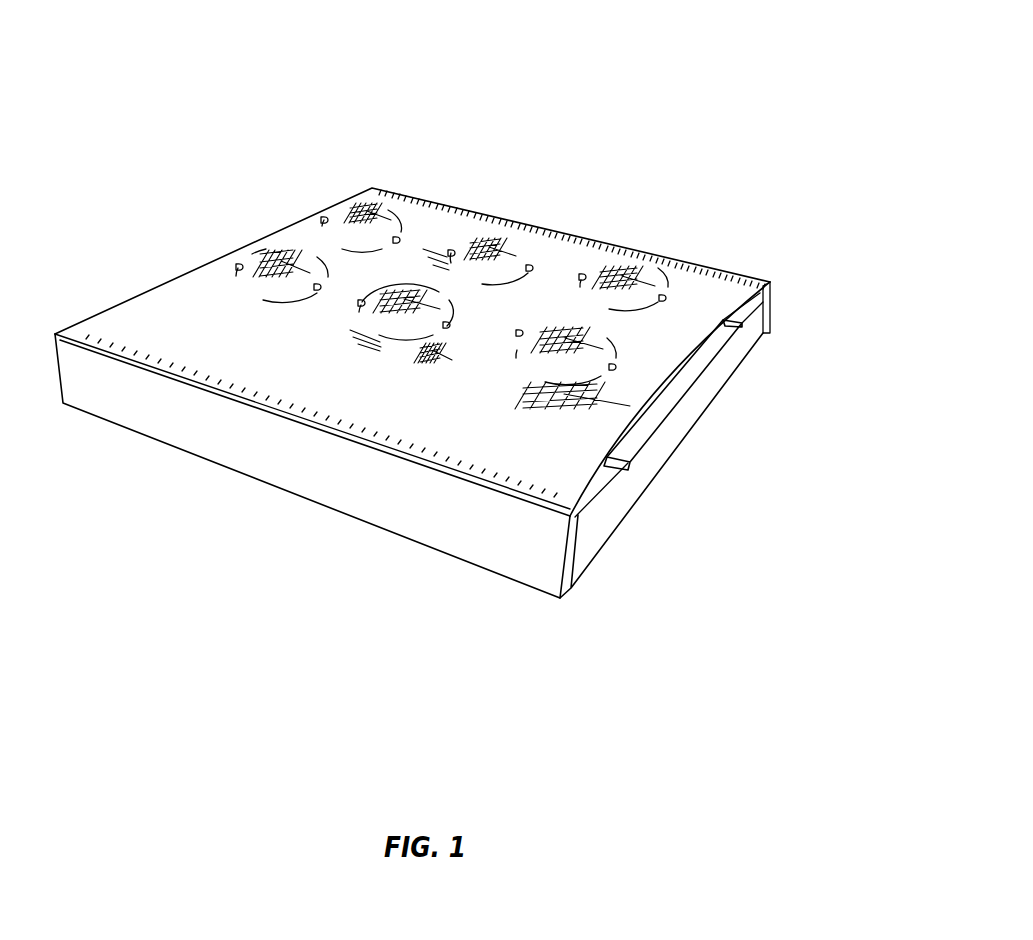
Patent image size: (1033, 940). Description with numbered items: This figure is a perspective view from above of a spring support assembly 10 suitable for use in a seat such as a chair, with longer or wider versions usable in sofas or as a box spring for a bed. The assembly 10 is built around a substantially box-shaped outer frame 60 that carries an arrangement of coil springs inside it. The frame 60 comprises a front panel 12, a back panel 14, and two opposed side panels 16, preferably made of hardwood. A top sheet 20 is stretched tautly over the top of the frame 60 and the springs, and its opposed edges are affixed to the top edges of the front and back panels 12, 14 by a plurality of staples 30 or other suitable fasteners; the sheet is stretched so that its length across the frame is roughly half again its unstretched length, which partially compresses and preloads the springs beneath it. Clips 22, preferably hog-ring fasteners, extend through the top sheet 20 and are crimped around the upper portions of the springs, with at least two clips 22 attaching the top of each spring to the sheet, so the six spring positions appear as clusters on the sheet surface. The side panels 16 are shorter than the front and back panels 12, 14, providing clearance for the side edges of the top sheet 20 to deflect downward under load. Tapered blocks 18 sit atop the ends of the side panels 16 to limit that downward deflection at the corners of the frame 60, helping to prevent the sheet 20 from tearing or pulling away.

The spring support assembly 10 is at (589, 81).
The front panel 12 is at (293, 463).
The back panel 14 is at (770, 298).
The side panels 16 is at (683, 418).
The tapered blocks 18 is at (768, 305).
The top sheet 20 is at (401, 403).
The clips 22 is at (308, 280).
The staples 30 is at (420, 195).
The frame 60 is at (587, 575).